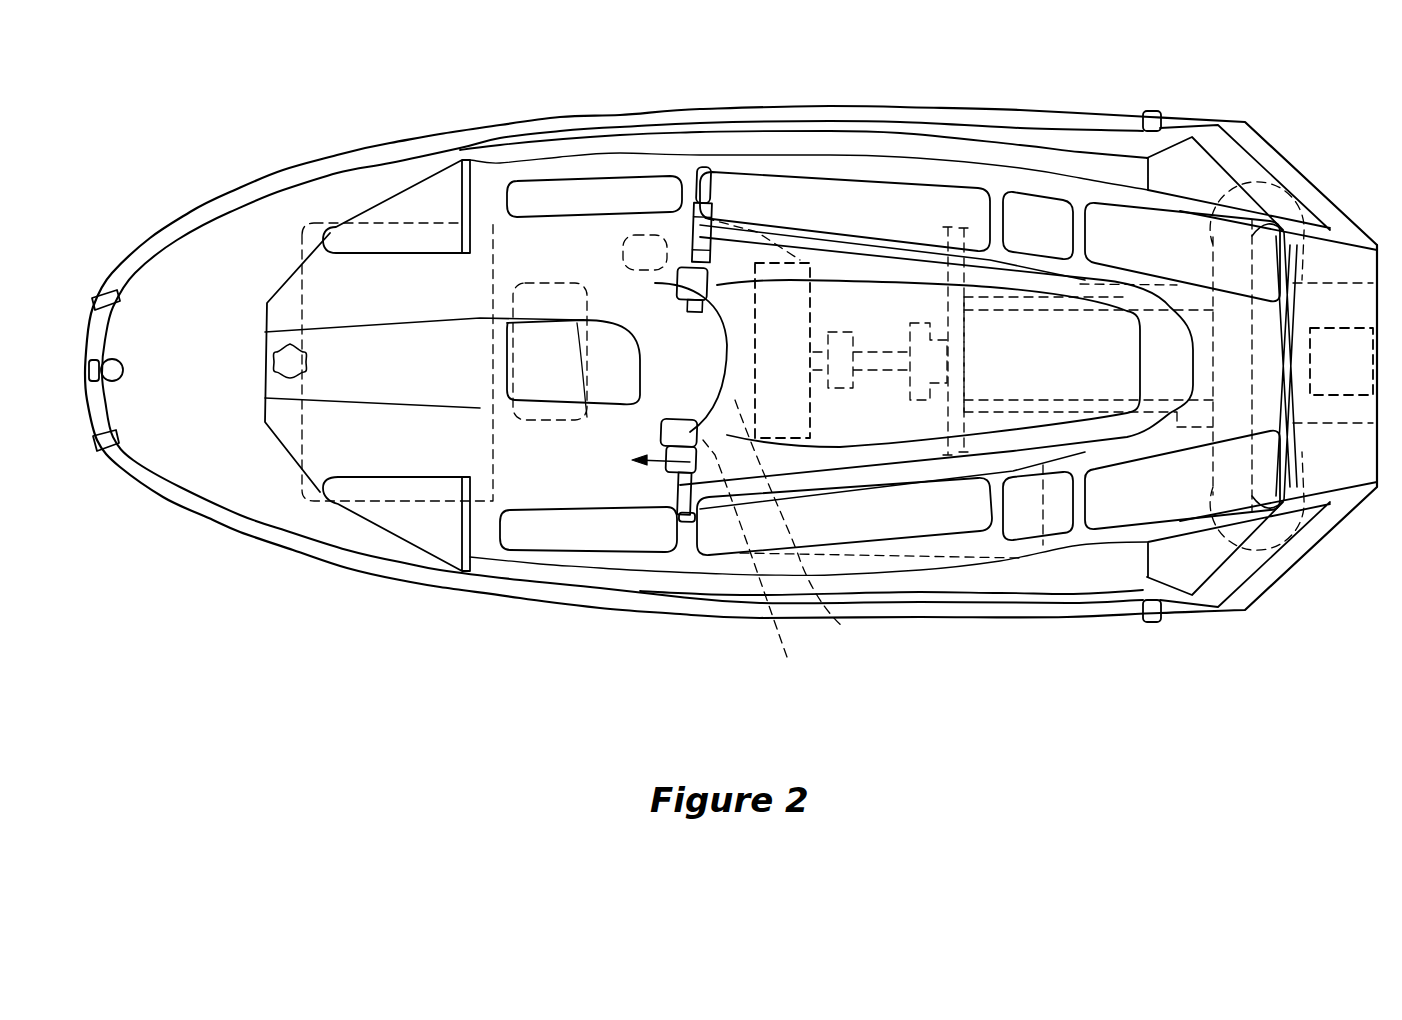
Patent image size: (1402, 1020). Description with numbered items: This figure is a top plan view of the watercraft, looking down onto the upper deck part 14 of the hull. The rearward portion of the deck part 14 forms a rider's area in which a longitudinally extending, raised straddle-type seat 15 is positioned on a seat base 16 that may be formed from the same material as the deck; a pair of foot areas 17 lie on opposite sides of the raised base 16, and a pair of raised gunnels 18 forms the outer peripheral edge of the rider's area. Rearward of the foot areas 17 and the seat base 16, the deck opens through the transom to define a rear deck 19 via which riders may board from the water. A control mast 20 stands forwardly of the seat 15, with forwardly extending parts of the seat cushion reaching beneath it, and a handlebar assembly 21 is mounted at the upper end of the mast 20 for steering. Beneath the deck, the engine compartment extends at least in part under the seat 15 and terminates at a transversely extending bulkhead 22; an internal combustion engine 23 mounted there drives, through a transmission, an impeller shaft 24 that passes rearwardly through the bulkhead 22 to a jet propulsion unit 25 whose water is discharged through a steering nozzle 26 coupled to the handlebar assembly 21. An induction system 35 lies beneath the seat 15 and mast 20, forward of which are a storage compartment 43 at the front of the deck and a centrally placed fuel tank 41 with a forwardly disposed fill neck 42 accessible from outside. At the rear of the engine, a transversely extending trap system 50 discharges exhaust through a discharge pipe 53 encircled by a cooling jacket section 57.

The upper deck part 14 is at (520, 582).
The straddle-type seat 15 is at (898, 283).
The seat base 16 is at (1013, 285).
The foot areas 17 is at (848, 185).
The raised gunnels 18 is at (1110, 163).
The rear deck 19 is at (1354, 320).
The control mast 20 is at (573, 343).
The handlebar assembly 21 is at (708, 178).
The bulkhead 22 is at (965, 360).
The internal combustion engine 23 is at (605, 472).
The impeller shaft 24 is at (873, 372).
The jet propulsion unit 25 is at (1121, 298).
The steering nozzle 26 is at (1328, 397).
The induction system 35 is at (716, 565).
The fuel tank 41 is at (280, 480).
The fill neck 42 is at (270, 378).
The storage compartment 43 is at (543, 283).
The trap system 50 is at (815, 296).
The discharge pipe 53 is at (843, 627).
The cooling jacket section 57 is at (800, 260).